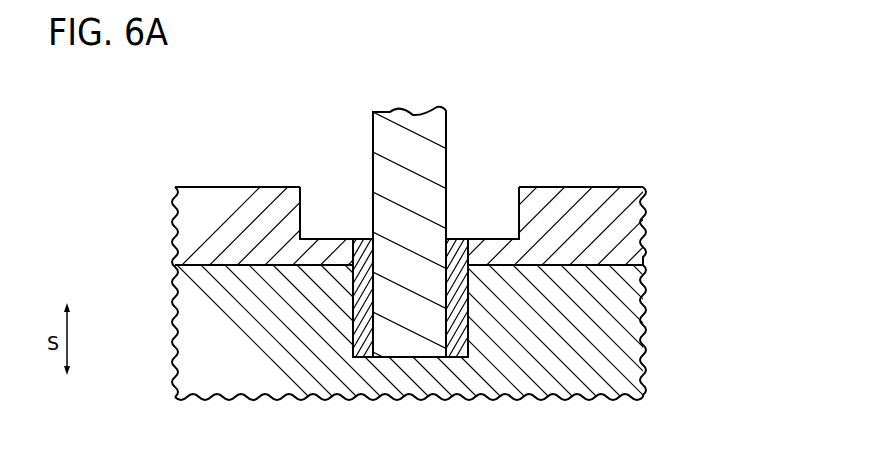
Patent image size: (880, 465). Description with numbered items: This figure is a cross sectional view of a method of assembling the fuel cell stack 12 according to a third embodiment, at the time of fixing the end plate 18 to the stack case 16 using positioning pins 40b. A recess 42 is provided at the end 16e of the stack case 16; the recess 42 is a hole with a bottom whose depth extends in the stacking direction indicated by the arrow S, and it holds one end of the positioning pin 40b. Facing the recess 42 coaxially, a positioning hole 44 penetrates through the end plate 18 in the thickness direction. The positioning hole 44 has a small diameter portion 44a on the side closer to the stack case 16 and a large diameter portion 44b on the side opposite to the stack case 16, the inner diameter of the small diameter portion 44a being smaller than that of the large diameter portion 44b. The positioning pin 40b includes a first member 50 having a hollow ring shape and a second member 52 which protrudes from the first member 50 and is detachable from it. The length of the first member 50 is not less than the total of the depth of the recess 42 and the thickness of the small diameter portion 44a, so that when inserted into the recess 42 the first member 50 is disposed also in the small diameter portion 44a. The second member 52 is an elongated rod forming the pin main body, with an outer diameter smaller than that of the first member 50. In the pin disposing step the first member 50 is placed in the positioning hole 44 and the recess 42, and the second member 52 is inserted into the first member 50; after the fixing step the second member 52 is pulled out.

The fuel cell stack 12 is at (229, 152).
The stack case 16 is at (652, 355).
The end of the stack case 16e is at (613, 325).
The end plate 18 is at (578, 180).
The positioning pin 40b is at (367, 107).
The recess 42 is at (367, 338).
The positioning hole 44 is at (320, 181).
The small diameter portion 44a is at (460, 248).
The large diameter portion 44b is at (519, 204).
The first member 50 is at (356, 335).
The second member 52 is at (388, 217).